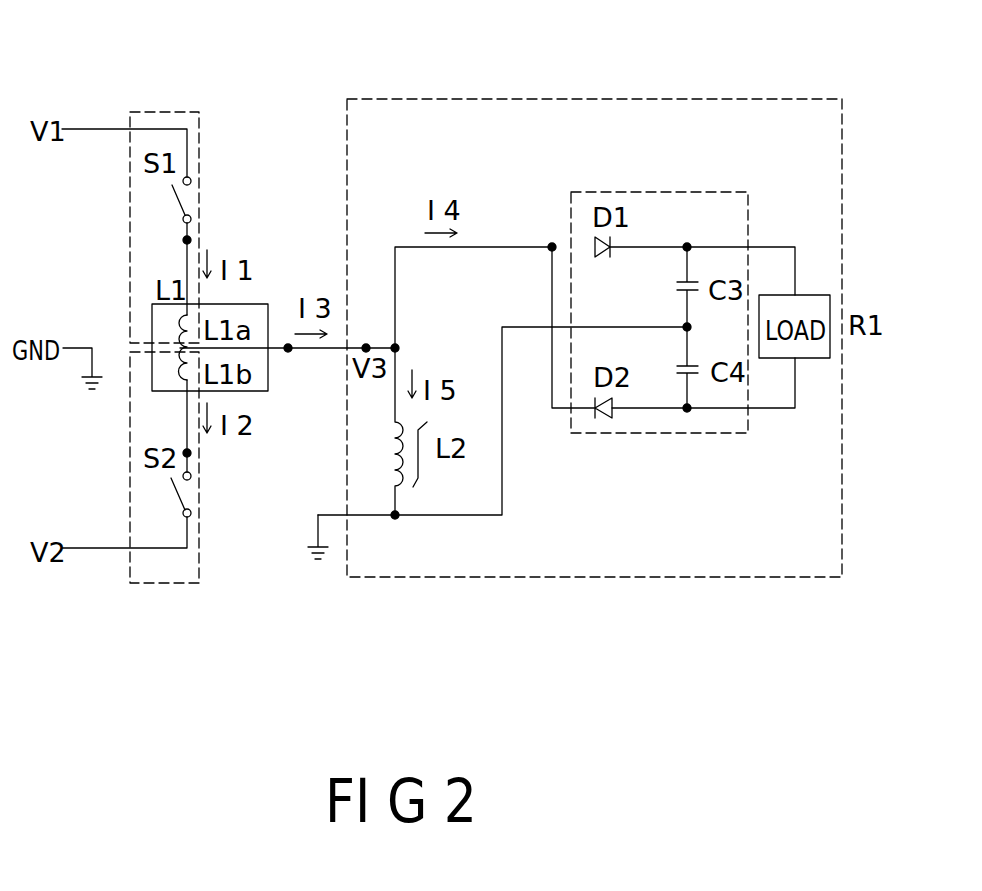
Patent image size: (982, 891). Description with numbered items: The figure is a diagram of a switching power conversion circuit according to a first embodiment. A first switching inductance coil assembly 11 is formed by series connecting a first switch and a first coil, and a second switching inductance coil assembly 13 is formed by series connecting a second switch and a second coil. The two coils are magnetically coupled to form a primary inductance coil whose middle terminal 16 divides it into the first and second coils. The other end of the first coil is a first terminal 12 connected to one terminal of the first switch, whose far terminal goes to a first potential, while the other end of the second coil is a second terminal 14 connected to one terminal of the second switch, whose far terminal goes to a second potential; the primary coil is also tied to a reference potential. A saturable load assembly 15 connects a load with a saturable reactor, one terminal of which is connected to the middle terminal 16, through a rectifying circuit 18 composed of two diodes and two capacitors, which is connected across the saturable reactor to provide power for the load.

The first switching inductance coil assembly 11 is at (199, 112).
The first terminal 12 is at (189, 238).
The second switching inductance coil assembly 13 is at (196, 563).
The second terminal 14 is at (189, 455).
The saturable load assembly 15 is at (767, 98).
The middle terminal 16 is at (287, 343).
The rectifying circuit 18 is at (668, 190).